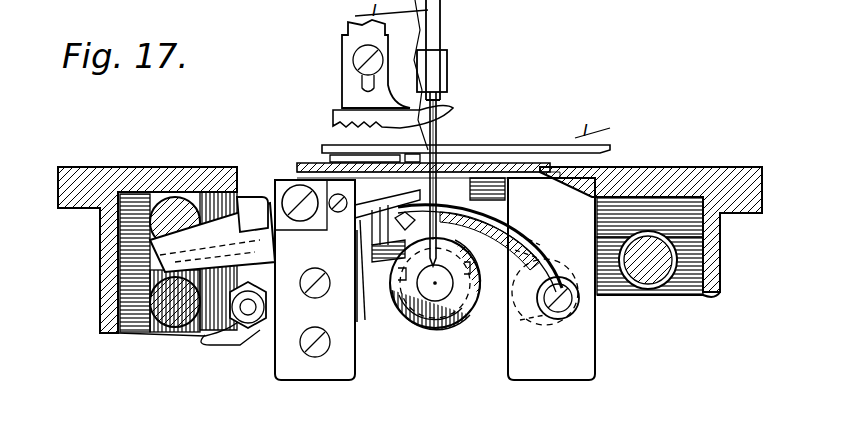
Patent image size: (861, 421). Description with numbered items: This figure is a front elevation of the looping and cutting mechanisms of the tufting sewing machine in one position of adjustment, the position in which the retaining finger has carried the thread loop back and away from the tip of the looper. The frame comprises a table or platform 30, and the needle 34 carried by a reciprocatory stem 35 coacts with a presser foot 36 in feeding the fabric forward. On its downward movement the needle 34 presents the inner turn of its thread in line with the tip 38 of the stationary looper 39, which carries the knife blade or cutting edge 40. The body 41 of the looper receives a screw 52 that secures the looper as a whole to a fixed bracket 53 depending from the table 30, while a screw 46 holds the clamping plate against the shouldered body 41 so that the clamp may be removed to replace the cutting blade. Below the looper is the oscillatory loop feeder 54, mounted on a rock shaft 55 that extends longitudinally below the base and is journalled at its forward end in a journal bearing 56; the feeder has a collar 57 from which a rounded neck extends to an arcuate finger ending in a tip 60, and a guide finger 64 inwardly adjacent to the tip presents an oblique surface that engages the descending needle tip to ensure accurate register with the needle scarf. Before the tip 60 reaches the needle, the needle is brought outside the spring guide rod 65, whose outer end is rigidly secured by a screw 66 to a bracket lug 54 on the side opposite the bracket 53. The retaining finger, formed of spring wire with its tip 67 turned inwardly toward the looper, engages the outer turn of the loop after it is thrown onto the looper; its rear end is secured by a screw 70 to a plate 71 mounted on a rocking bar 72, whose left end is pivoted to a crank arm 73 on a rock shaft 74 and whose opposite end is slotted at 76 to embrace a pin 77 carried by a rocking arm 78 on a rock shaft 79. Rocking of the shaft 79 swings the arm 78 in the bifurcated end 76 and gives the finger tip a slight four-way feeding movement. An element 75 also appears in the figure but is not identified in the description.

The table or platform 30 is at (688, 167).
The needle 34 is at (445, 100).
The reciprocatory stem 35 is at (447, 65).
The presser foot 36 is at (342, 86).
The tip of the stationary looper 38 is at (450, 186).
The stationary looper 39 is at (353, 178).
The knife blade or cutting edge 40 is at (357, 226).
The body of the looper 41 is at (285, 213).
The screw 46 is at (333, 195).
The screw 52 is at (290, 194).
The fixed bracket 53 is at (357, 316).
The oscillatory loop feeder 54 is at (580, 368).
The rock shaft 55 is at (435, 300).
The journal bearing 56 is at (400, 318).
The collar 57 is at (466, 303).
The tip of the finger 60 is at (398, 248).
The guide finger 64 is at (381, 264).
The spring guide rod 65 is at (528, 230).
The screw 66 is at (360, 258).
The tip of the retaining finger 67 is at (411, 160).
The screw 70 is at (478, 186).
The plate 71 is at (499, 189).
The rocking bar 72 is at (518, 204).
The crank arm 73 is at (100, 276).
The rock shaft 74 is at (215, 330).
The nut 75 is at (248, 325).
The slot 76 is at (478, 290).
The pin 77 is at (532, 328).
The rocking arm 78 is at (640, 300).
The rock shaft 79 is at (712, 292).